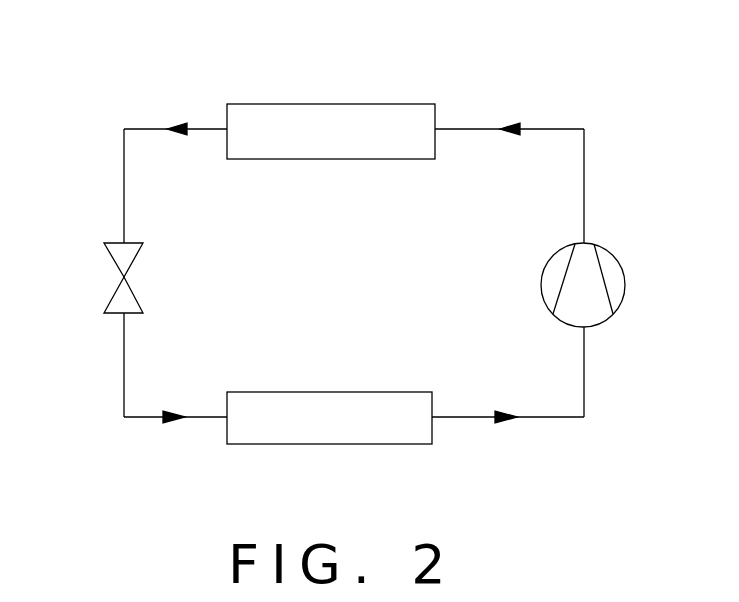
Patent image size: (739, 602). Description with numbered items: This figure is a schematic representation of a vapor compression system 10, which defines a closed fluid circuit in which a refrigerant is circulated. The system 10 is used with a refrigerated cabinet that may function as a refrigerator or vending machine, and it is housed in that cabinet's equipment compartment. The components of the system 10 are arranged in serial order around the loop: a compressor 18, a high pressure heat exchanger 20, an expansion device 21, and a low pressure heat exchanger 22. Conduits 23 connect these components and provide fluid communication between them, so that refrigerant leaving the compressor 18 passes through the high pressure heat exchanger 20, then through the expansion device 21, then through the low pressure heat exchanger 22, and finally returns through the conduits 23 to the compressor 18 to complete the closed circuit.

The vapor compression system 10 is at (549, 81).
The compressor 18 is at (628, 285).
The high pressure heat exchanger 20 is at (317, 113).
The expansion device 21 is at (110, 255).
The low pressure heat exchanger 22 is at (342, 444).
The conduits 23 is at (124, 165).